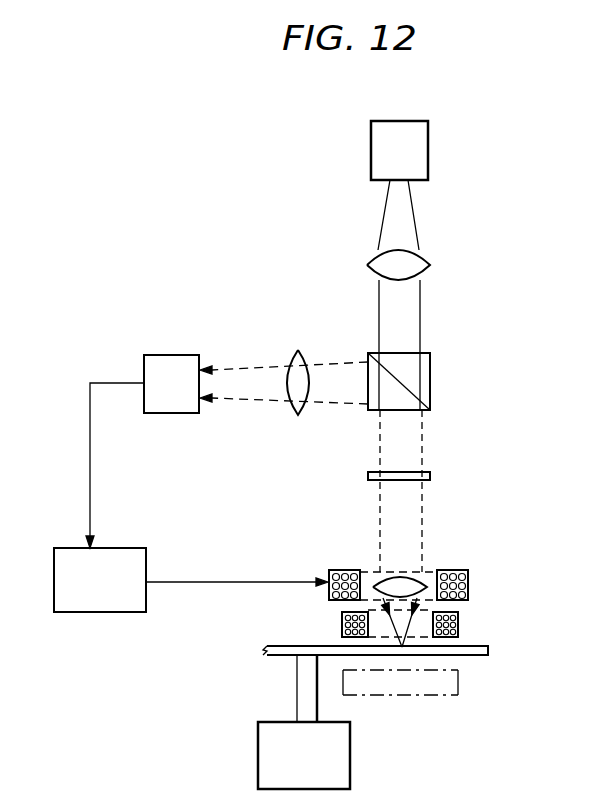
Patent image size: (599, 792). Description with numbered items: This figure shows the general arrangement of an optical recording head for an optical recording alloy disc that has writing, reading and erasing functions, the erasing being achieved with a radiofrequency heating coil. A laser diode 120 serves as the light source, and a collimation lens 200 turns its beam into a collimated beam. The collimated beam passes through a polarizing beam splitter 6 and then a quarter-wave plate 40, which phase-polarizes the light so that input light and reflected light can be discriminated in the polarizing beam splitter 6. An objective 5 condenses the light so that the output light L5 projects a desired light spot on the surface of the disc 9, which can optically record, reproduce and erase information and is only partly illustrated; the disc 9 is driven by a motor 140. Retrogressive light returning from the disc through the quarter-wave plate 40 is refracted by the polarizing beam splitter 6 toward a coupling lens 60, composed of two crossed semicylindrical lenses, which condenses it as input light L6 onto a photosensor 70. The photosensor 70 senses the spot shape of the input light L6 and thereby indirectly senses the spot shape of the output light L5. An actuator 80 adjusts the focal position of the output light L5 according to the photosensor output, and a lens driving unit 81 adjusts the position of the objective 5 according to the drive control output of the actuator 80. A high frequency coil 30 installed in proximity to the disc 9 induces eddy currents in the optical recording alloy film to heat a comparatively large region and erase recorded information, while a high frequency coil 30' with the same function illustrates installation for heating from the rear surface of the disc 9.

The laser diode 120 is at (428, 138).
The collimation lens 200 is at (430, 265).
The polarizing beam splitter 6 is at (430, 372).
The λ/4 plate 40 is at (430, 476).
The coupling lens 60 is at (297, 415).
The photosensor 70 is at (167, 413).
The actuator 80 is at (115, 612).
The lens driving unit 81 is at (332, 570).
The objective 5 is at (415, 577).
The high frequency coil 30 is at (425, 611).
The disc 9 is at (488, 653).
The high frequency coil 30' is at (430, 683).
The motor 140 is at (350, 768).
The output light L5 is at (405, 622).
The input light L6 is at (253, 365).